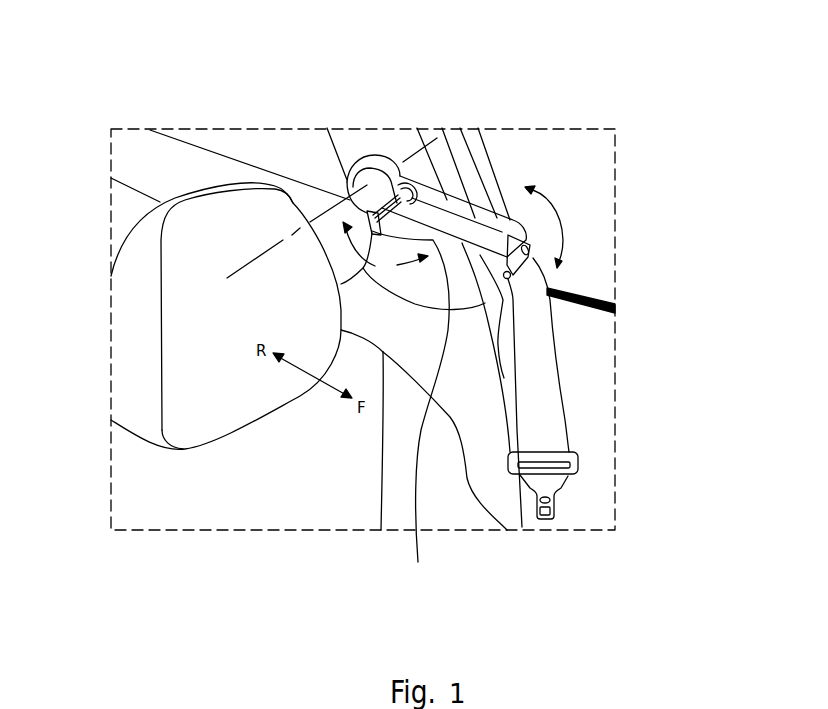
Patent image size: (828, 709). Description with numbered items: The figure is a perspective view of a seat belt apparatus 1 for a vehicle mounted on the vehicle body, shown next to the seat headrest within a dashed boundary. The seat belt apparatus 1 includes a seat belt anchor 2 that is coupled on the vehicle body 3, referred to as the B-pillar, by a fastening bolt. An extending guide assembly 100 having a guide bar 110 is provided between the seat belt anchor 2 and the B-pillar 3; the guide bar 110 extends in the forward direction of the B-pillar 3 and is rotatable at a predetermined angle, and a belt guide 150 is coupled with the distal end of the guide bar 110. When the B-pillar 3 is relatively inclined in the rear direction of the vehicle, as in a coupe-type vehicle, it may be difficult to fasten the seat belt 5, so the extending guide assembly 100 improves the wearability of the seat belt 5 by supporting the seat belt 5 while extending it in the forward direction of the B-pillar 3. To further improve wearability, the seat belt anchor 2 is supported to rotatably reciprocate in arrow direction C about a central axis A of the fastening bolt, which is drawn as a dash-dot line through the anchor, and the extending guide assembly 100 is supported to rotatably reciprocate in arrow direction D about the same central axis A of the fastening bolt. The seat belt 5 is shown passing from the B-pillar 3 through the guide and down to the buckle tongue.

The seat belt apparatus 1 is at (128, 47).
The seat belt anchor 2 is at (341, 177).
The vehicle body 3 is at (382, 149).
The seat belt 5 is at (475, 357).
The extending guide assembly 100 is at (521, 217).
The guide bar 110 is at (483, 148).
The belt guide 150 is at (553, 293).
The central axis A is at (250, 264).
The arrow direction C is at (385, 254).
The arrow direction D is at (551, 227).